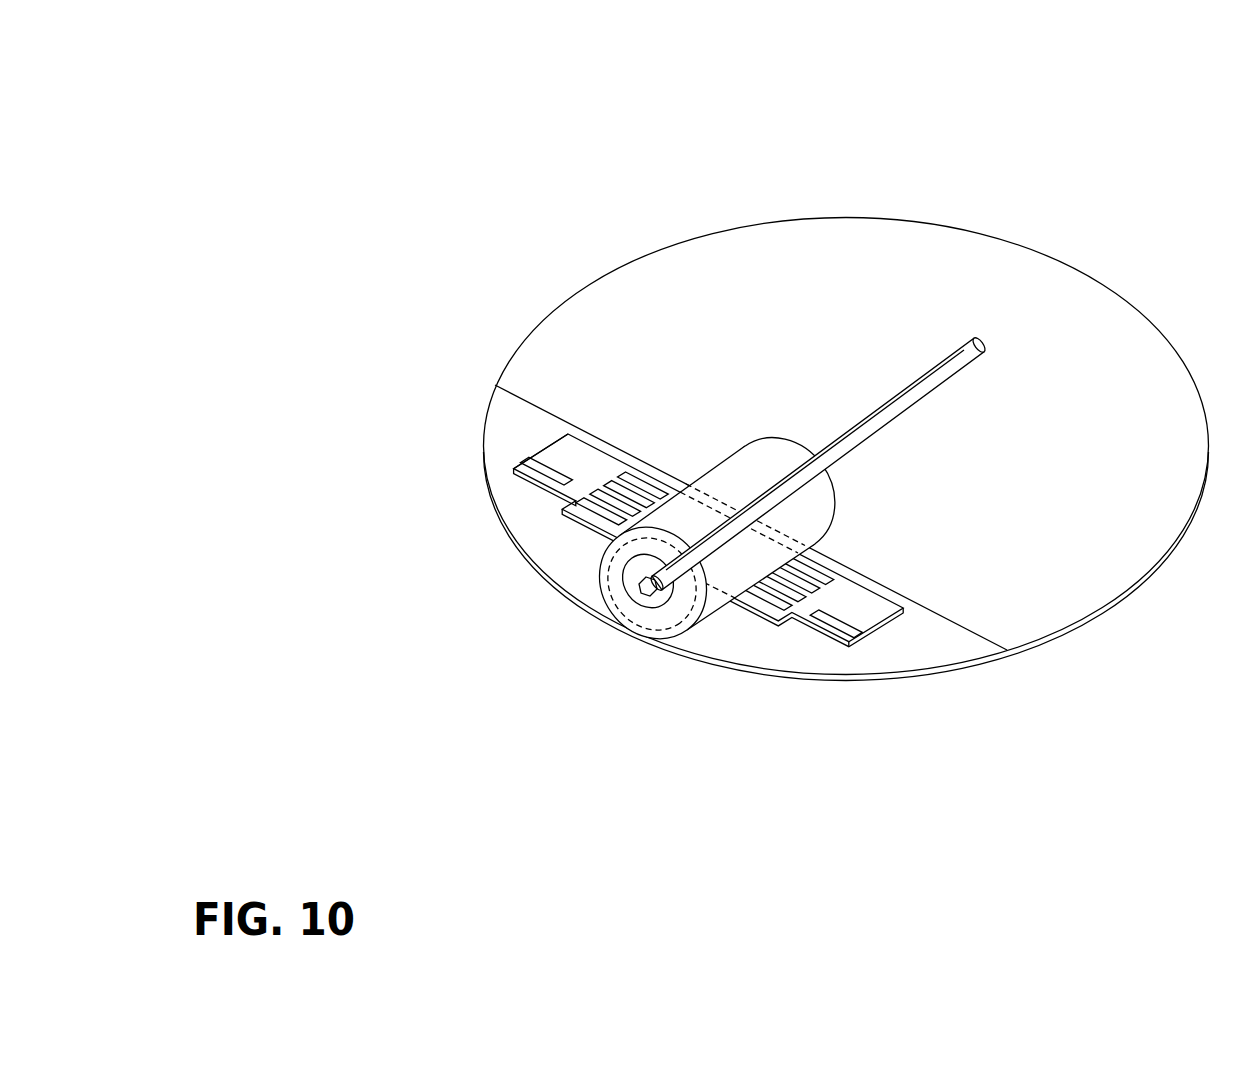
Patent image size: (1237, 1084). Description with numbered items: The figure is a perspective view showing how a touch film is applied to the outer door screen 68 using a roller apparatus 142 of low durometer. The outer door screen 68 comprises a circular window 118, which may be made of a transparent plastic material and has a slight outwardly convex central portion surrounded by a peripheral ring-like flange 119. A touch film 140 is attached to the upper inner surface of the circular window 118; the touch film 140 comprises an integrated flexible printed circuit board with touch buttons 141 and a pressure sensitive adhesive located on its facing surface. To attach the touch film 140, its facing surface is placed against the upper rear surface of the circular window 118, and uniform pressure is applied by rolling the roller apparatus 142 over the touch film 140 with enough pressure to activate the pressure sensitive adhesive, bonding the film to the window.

The outer door screen 68 is at (668, 148).
The circular window 118 is at (1027, 295).
The peripheral ring-like flange 119 is at (948, 672).
The touch film 140 is at (620, 539).
The touch buttons 141 is at (530, 480).
The roller apparatus 142 is at (649, 650).